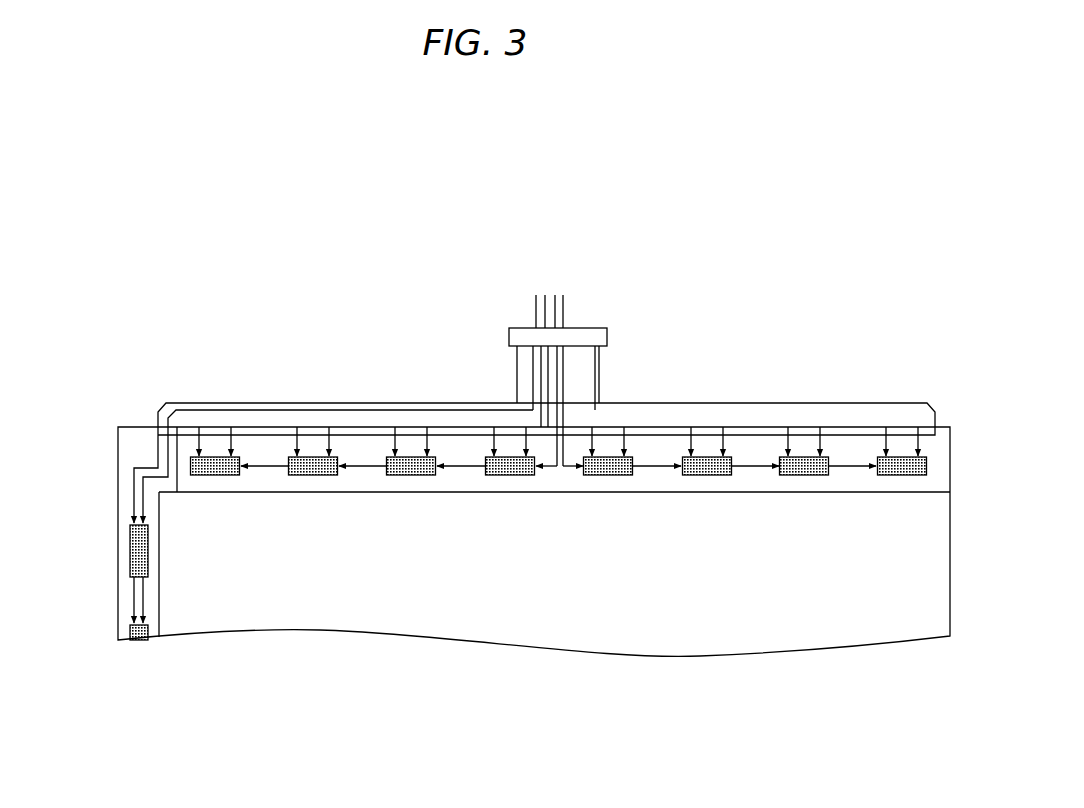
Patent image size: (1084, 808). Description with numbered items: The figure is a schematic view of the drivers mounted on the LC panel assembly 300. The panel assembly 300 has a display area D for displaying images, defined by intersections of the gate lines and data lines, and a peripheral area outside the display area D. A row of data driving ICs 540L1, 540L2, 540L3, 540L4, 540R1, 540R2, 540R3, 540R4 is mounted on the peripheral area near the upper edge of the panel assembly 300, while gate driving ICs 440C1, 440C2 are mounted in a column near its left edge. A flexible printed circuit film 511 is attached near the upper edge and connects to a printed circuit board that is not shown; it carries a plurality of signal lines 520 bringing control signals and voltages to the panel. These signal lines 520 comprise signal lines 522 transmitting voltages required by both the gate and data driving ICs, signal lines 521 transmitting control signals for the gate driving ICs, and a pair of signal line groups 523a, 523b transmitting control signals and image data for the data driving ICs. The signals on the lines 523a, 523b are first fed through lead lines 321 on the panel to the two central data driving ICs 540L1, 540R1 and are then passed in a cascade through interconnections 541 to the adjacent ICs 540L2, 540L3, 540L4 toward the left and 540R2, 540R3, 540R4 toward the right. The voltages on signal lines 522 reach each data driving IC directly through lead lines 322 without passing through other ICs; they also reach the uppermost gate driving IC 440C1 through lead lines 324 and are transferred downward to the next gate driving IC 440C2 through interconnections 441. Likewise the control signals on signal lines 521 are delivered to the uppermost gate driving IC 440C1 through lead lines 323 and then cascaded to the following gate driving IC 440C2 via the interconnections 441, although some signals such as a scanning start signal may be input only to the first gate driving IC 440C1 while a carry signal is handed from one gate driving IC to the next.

The panel assembly 300 is at (118, 506).
The display area D is at (797, 580).
The flexible printed circuit film 511 is at (842, 403).
The signal lines 520 is at (658, 207).
The signal lines 521 is at (535, 295).
The signal lines 522 is at (544, 296).
The signal lines 523a is at (555, 296).
The signal lines 523b is at (563, 305).
The lead lines 321 is at (556, 462).
The lead lines 322 is at (198, 440).
The lead lines 323 is at (134, 467).
The lead lines 324 is at (159, 472).
The interconnections 541 is at (745, 466).
The data driving IC 540L4 is at (215, 476).
The data driving IC 540L3 is at (313, 476).
The data driving IC 540L2 is at (411, 476).
The data driving IC 540L1 is at (510, 476).
The data driving IC 540R1 is at (608, 476).
The data driving IC 540R2 is at (707, 476).
The data driving IC 540R3 is at (804, 476).
The data driving IC 540R4 is at (902, 476).
The gate driving IC 440C1 is at (130, 553).
The gate driving IC 440C2 is at (130, 631).
The interconnections 441 is at (145, 592).